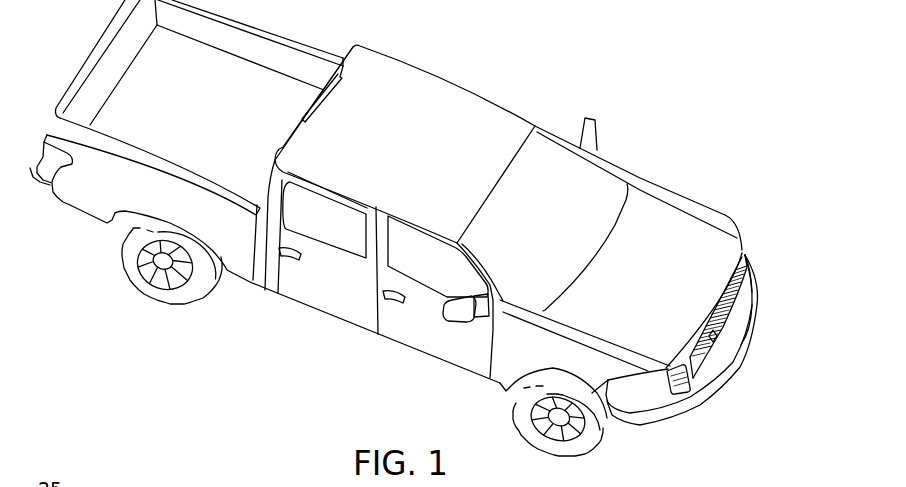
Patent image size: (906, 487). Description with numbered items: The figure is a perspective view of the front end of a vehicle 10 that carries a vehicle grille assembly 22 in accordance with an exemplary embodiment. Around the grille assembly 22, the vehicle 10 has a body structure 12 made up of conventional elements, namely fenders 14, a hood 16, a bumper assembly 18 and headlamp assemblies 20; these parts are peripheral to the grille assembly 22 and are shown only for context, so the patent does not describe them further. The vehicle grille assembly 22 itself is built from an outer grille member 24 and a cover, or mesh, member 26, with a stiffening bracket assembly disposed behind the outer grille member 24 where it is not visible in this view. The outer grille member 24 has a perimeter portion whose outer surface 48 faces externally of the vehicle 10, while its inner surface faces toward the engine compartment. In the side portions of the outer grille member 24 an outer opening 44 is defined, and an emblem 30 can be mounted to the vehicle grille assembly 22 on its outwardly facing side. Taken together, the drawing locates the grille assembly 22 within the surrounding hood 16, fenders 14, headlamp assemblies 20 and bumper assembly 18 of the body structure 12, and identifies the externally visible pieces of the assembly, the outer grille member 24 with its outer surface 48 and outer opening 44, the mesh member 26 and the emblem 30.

The vehicle 10 is at (477, 41).
The body structure 12 is at (659, 176).
The fenders 14 is at (567, 367).
The hood 16 is at (687, 247).
The bumper assembly 18 is at (667, 428).
The headlamp assemblies 20 is at (640, 393).
The vehicle grille assembly 22 is at (754, 319).
The outer grille member 24 is at (750, 338).
The cover member 26 is at (755, 295).
The emblem 30 is at (718, 340).
The outer opening 44 is at (688, 392).
The outer surface 48 is at (740, 278).